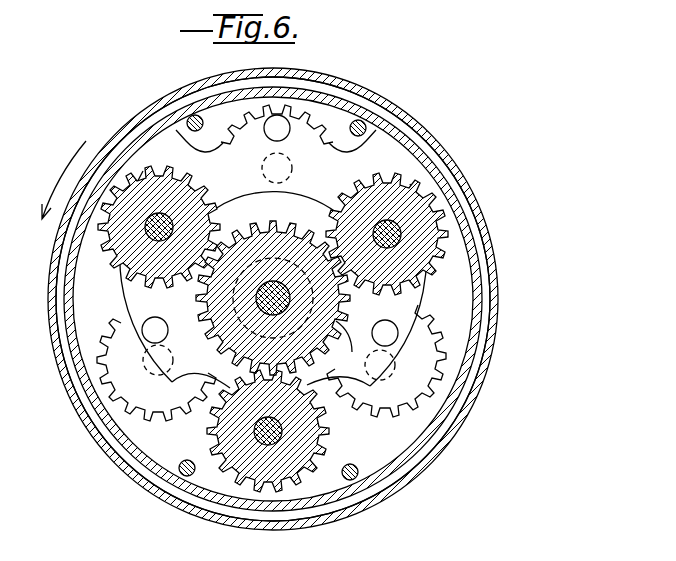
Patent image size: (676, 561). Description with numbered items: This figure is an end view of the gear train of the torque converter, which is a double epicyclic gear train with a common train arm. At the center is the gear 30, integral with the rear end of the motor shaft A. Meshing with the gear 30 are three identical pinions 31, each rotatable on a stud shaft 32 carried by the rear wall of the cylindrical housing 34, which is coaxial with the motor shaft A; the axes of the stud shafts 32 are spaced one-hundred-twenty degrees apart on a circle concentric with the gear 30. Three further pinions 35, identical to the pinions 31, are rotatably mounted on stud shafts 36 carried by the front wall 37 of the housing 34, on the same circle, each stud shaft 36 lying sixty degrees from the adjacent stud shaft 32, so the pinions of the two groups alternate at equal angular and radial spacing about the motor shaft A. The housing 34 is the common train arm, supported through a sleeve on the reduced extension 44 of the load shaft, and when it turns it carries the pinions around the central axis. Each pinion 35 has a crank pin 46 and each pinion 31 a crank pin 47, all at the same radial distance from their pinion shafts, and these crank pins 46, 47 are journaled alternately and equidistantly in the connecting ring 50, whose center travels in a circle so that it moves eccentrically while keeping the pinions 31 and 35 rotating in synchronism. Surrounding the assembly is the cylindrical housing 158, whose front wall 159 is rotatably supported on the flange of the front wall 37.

The gear 30 is at (285, 300).
The pinion 31 is at (176, 172).
The stud shaft 32 is at (152, 247).
The cylindrical housing 34 is at (481, 304).
The pinion 35 is at (330, 140).
The stud shaft 36 is at (292, 165).
The front wall 37 is at (392, 456).
The reduced extension 44 is at (345, 343).
The crank pin 46 is at (284, 134).
The crank pin 47 is at (238, 192).
The connecting ring 50 is at (262, 193).
The cylindrical housing 158 is at (473, 203).
The front wall 159 is at (481, 243).
The motor shaft A is at (236, 295).